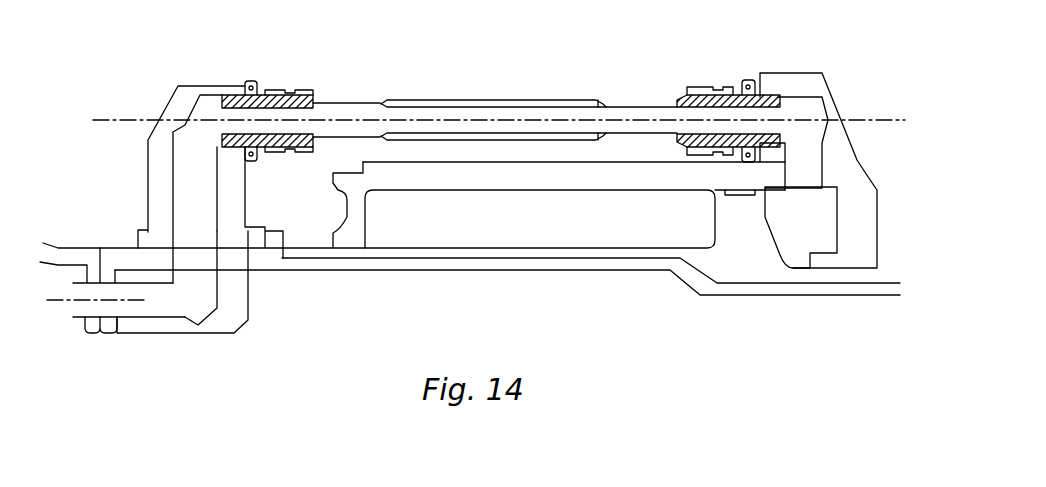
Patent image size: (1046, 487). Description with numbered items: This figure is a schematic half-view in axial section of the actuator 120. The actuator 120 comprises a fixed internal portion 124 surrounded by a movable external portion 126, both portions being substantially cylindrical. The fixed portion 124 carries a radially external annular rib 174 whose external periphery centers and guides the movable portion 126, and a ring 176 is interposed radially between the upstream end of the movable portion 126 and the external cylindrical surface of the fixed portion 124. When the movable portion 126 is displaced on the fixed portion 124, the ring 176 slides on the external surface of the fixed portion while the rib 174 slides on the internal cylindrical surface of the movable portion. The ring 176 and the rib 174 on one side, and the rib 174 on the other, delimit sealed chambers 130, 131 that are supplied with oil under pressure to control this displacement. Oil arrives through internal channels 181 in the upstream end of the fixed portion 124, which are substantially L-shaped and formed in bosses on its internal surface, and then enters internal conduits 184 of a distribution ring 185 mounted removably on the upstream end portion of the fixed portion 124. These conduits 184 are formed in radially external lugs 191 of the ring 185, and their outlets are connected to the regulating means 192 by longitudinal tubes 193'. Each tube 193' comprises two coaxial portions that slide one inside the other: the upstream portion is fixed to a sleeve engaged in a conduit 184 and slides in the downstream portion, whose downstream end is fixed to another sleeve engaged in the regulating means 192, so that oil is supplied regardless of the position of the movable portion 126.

The actuator 120 is at (715, 60).
The fixed internal portion 124 is at (588, 248).
The movable external portion 126 is at (478, 177).
The sealed chamber 130 is at (540, 219).
The sealed chamber 131 is at (801, 227).
The radially external annular rib 174 is at (735, 237).
The ring 176 is at (357, 233).
The internal channels 181 is at (128, 310).
The internal conduits 184 is at (188, 182).
The distribution ring 185 is at (230, 233).
The radially external lugs 191 is at (235, 177).
The regulating means 192 is at (805, 82).
The tube 193' is at (493, 93).